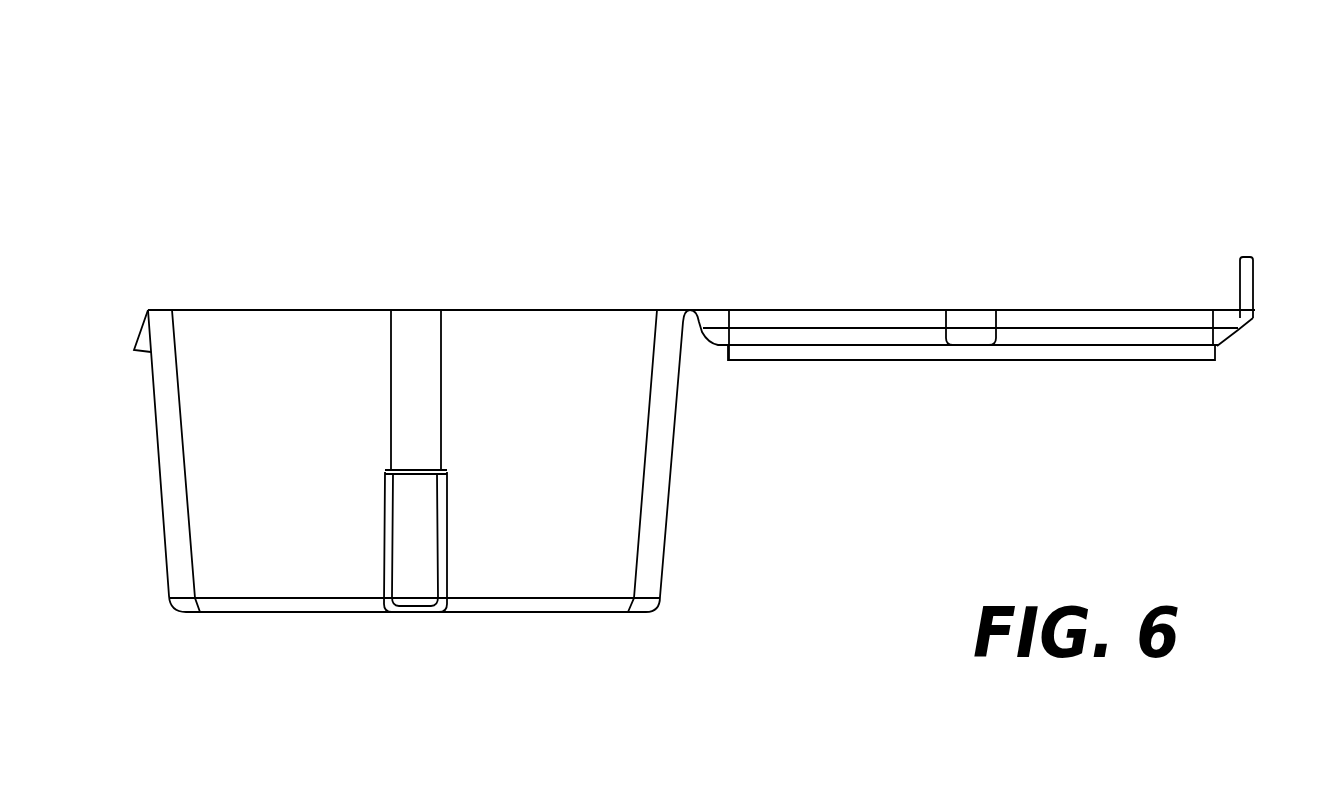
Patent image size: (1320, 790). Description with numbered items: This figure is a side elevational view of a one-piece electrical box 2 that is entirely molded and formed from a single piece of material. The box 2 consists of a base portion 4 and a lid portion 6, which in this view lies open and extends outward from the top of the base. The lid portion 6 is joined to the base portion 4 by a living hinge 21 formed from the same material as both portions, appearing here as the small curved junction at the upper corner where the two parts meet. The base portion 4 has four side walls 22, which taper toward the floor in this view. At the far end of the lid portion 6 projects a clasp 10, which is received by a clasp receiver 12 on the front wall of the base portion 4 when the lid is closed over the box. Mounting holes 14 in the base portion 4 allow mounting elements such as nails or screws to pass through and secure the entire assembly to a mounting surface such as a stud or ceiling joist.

The one-piece electrical box 2 is at (366, 156).
The base portion 4 is at (254, 270).
The lid portion 6 is at (790, 259).
The clasp 10 is at (1249, 257).
The clasp receiver 12 is at (135, 334).
The mounting holes 14 is at (415, 476).
The living hinge 21 is at (690, 308).
The side walls 22 is at (326, 443).